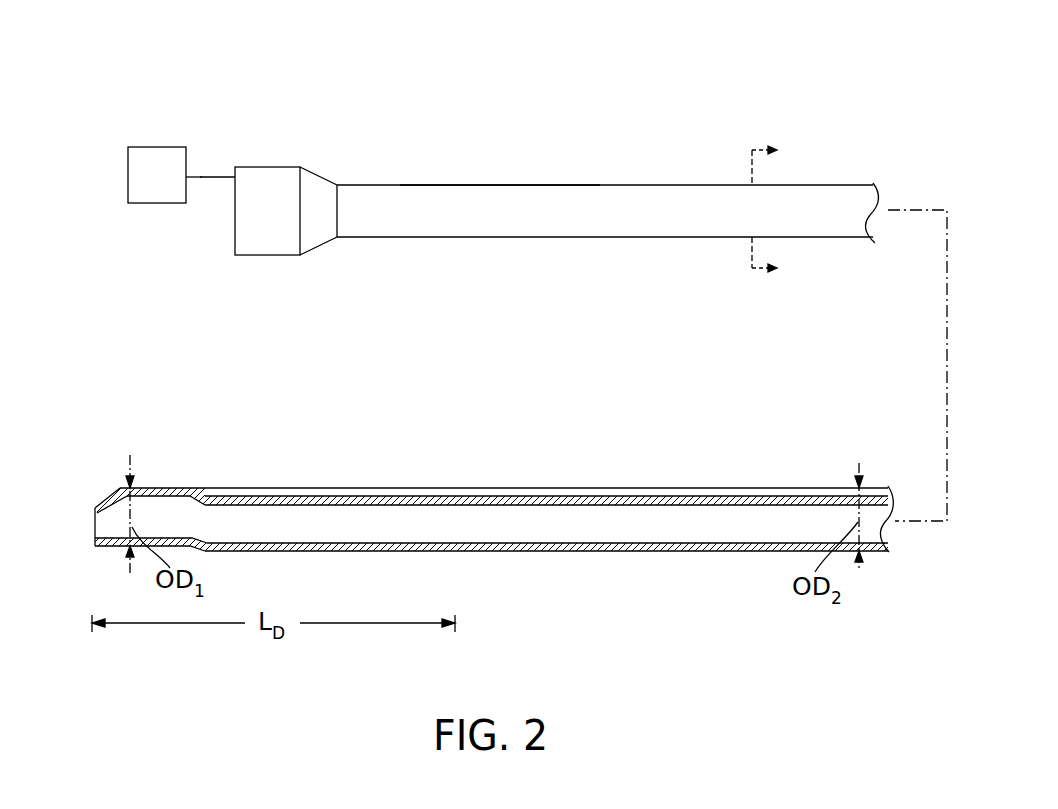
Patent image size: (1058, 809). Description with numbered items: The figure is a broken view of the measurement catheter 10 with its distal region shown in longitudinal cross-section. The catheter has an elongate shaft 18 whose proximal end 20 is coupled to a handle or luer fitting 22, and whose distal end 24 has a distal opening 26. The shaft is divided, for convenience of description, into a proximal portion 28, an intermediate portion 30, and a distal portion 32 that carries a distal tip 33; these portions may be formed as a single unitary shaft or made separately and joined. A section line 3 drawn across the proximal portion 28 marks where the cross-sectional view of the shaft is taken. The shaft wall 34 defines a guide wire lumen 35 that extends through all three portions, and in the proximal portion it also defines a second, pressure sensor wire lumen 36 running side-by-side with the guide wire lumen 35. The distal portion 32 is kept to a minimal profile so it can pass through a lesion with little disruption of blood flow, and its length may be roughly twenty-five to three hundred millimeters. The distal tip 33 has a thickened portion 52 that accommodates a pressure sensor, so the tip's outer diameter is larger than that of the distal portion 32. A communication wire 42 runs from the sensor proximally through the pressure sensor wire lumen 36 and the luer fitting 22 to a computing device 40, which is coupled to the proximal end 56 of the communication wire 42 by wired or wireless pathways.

The measurement catheter 10 is at (645, 118).
The elongate shaft 18 is at (580, 238).
The proximal end 20 is at (337, 237).
The luer fitting 22 is at (290, 167).
The distal end 24 is at (95, 547).
The distal opening 26 is at (95, 520).
The proximal portion 28 is at (512, 178).
The intermediate portion 30 is at (662, 562).
The distal portion 32 is at (423, 466).
The distal tip 33 is at (152, 483).
The shaft wall 34 is at (527, 552).
The guide wire lumen 35 is at (318, 527).
The pressure sensor wire lumen 36 is at (245, 488).
The computing device 40 is at (160, 146).
The communication wire 42 is at (217, 176).
The thickened portion 52 is at (188, 483).
The proximal end of communication wire 56 is at (188, 175).
The section line 3- 3 is at (773, 213).